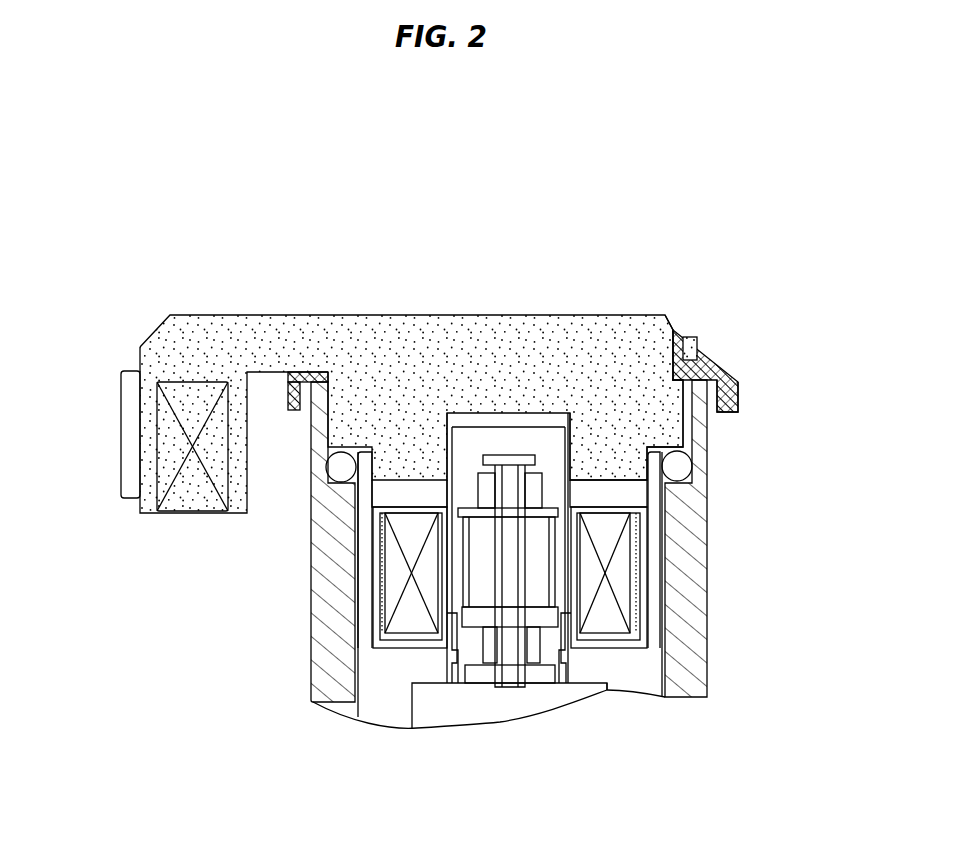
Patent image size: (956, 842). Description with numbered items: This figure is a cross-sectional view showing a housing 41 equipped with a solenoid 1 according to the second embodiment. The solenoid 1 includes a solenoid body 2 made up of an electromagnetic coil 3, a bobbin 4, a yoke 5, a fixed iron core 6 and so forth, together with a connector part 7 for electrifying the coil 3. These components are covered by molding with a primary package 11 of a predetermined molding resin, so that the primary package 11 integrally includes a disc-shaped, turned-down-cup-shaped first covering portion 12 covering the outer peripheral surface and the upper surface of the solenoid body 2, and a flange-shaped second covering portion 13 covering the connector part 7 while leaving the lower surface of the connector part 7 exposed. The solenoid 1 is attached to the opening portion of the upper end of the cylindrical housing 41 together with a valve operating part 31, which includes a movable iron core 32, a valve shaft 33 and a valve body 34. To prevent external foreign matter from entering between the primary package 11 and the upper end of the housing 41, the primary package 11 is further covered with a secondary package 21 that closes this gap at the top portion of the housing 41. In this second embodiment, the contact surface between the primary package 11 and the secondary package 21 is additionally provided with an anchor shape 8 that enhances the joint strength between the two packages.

The solenoid 1 is at (275, 278).
The solenoid body 2 is at (479, 599).
The electromagnetic coil 3 is at (400, 574).
The bobbin 4 is at (392, 640).
The yoke 5 is at (390, 495).
The fixed iron core 6 is at (497, 440).
The connector part 7 is at (173, 442).
The anchor shape 8 is at (698, 322).
The primary package 11 is at (505, 337).
The first covering portion 12 is at (562, 372).
The second covering portion 13 is at (192, 332).
The secondary package 21 is at (715, 368).
The valve operating part 31 is at (624, 706).
The movable iron core 32 is at (547, 593).
The valve shaft 33 is at (498, 680).
The valve body 34 is at (388, 705).
The housing 41 is at (697, 648).